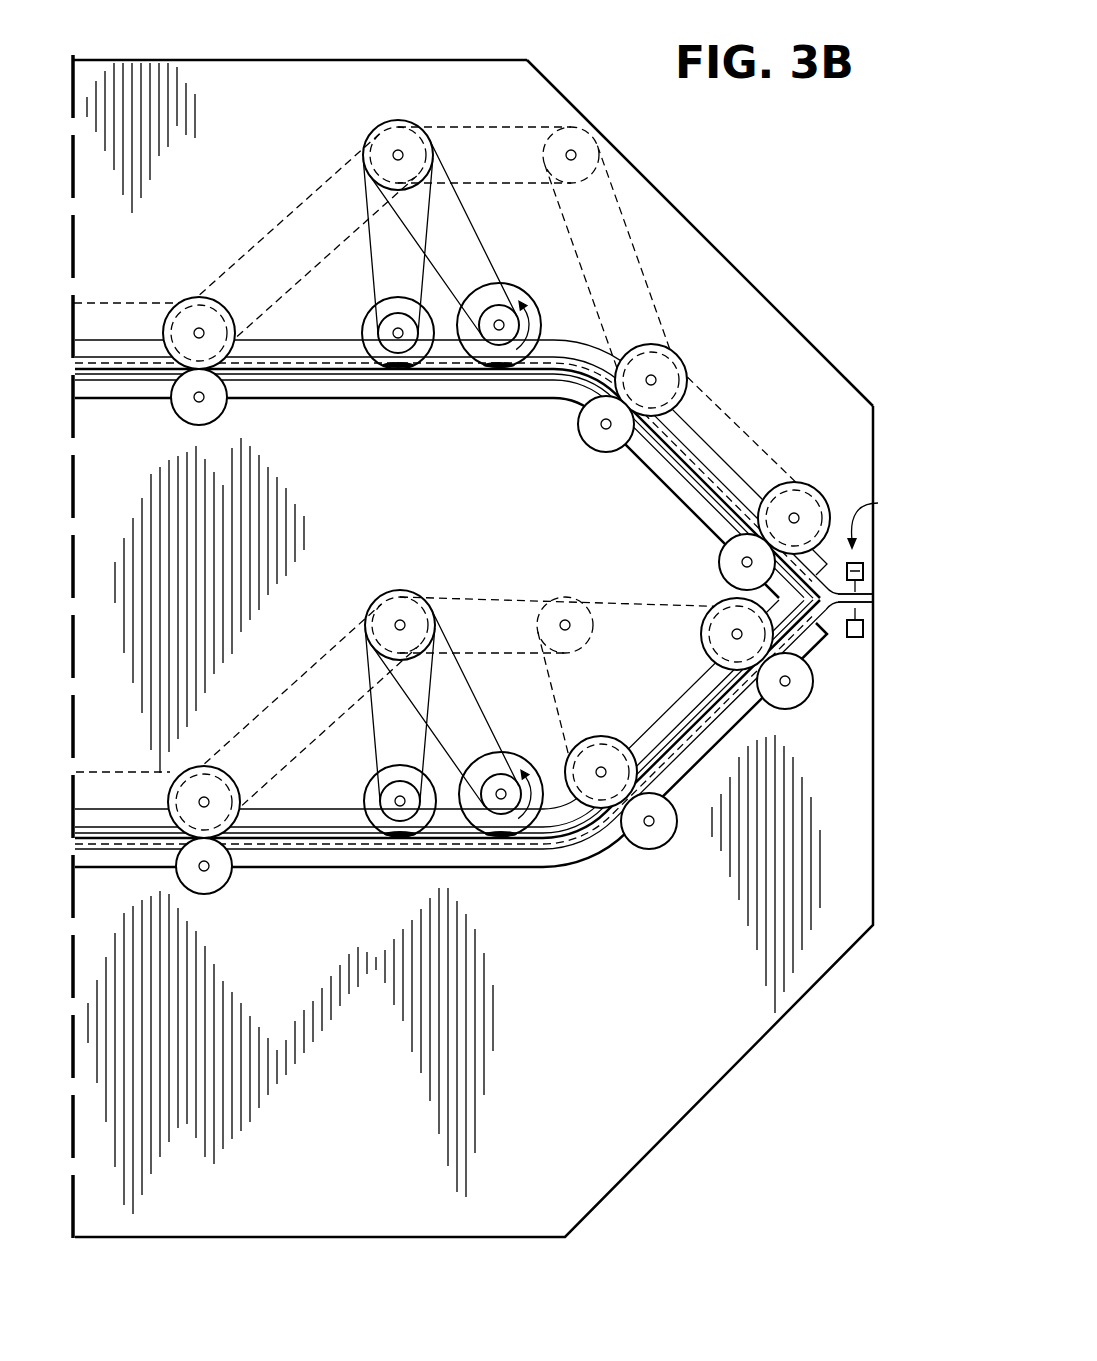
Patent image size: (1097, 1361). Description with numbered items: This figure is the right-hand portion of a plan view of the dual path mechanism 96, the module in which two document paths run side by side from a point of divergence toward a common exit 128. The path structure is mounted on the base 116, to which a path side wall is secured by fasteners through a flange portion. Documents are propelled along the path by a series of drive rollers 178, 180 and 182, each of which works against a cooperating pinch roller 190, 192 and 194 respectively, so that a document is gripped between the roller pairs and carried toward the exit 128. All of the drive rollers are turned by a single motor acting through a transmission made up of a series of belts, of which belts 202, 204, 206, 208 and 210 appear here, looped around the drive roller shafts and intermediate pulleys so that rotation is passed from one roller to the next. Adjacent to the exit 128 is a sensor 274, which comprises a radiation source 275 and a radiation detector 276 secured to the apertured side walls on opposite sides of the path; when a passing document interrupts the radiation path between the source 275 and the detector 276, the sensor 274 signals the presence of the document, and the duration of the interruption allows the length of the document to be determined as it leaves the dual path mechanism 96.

The dual path mechanism 96 is at (293, 51).
The base 116 is at (683, 222).
The exit 128 is at (876, 600).
The drive roller 178 is at (191, 298).
The drive roller 180 is at (688, 368).
The drive roller 182 is at (824, 487).
The pinch roller 190 is at (185, 410).
The pinch roller 192 is at (595, 442).
The pinch roller 194 is at (727, 566).
The belt 202 is at (95, 302).
The belt 204 is at (293, 205).
The belt 206 is at (497, 125).
The belt 208 is at (662, 313).
The belt 210 is at (735, 418).
The sensor 274 is at (887, 519).
The radiation source 275 is at (863, 567).
The radiation detector 276 is at (856, 639).